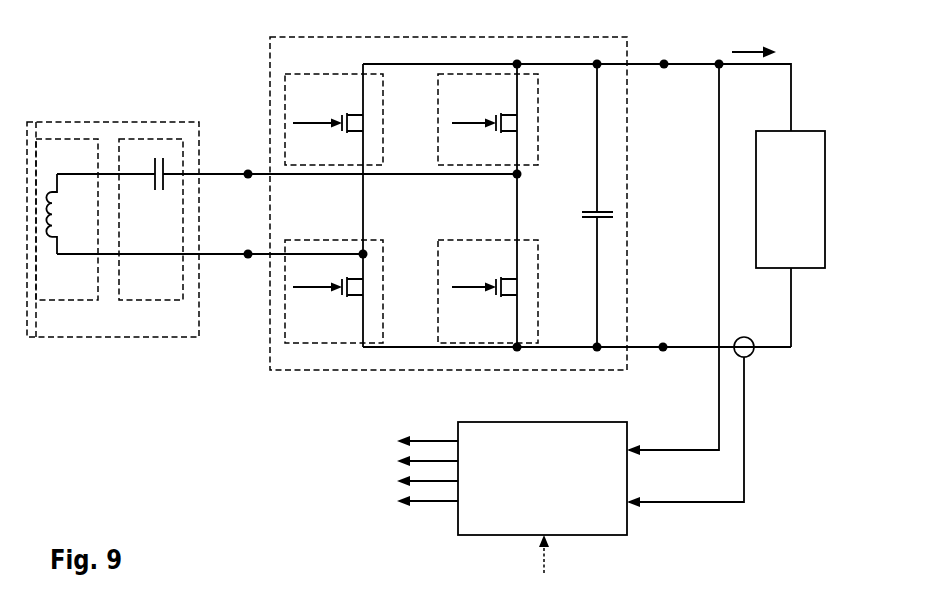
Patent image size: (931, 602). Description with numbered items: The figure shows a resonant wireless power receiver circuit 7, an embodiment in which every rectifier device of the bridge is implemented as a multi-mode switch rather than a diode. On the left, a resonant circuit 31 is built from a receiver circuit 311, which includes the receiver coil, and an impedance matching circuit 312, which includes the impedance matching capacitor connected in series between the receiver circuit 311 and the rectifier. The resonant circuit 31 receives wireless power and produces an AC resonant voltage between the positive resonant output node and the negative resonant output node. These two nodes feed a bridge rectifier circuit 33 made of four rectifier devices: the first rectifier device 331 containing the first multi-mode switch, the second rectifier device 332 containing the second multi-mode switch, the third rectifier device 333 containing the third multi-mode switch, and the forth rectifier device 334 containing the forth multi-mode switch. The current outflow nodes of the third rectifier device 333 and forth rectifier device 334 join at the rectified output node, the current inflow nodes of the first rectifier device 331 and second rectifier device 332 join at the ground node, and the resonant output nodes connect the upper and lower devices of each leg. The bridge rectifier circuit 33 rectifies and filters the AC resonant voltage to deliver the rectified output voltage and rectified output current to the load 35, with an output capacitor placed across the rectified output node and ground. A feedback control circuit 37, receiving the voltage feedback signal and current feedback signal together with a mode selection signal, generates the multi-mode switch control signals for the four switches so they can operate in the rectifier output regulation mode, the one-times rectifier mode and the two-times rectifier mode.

The resonant wireless power receiver circuit 7 is at (226, 53).
The resonant circuit 31 is at (183, 337).
The receiver circuit 311 is at (98, 300).
The impedance matching circuit 312 is at (183, 300).
The bridge rectifier circuit 33 is at (342, 37).
The first rectifier device 331 is at (332, 342).
The second rectifier device 332 is at (486, 342).
The third rectifier device 333 is at (323, 74).
The forth rectifier device 334 is at (438, 102).
The load 35 is at (799, 258).
The feedback control circuit 37 is at (549, 526).